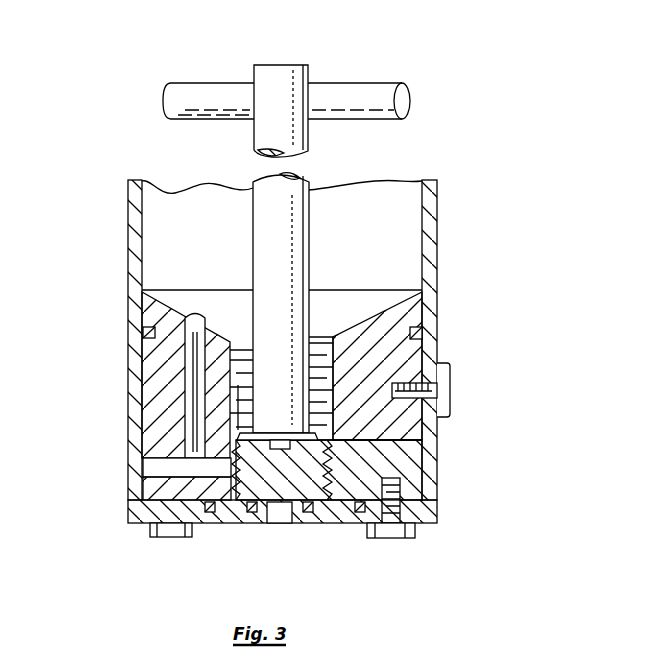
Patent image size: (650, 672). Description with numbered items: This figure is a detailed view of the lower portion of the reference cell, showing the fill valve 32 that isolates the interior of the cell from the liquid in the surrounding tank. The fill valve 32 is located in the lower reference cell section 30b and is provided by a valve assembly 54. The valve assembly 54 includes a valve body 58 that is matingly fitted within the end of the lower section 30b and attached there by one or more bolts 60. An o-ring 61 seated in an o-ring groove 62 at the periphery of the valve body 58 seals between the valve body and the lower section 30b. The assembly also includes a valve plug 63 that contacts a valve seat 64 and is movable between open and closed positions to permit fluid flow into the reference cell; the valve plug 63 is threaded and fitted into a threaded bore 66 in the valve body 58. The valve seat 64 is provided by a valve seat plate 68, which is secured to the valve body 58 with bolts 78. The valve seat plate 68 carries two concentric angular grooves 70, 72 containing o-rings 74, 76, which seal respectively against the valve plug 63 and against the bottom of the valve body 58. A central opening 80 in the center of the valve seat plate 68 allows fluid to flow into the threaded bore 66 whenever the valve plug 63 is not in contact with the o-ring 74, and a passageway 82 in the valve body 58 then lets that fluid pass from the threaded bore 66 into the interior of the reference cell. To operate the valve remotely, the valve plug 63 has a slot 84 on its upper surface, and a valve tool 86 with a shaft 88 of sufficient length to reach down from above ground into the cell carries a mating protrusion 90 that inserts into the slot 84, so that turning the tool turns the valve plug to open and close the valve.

The valve tool 86 is at (332, 71).
The shaft 88 is at (300, 133).
The lower reference cell section 30b is at (437, 212).
The fill valve 32 is at (284, 340).
The valve assembly 54 is at (206, 283).
The threaded bore 66 is at (233, 347).
The o-ring groove 62 is at (414, 330).
The o-ring 61 is at (424, 332).
The bolts 60 is at (449, 373).
The mating protrusion 90 is at (277, 430).
The valve body 58 is at (158, 407).
The passageway 82 is at (183, 441).
The slot 84 is at (347, 440).
The valve seat plate 68 is at (127, 511).
The bolts 78 is at (152, 528).
The groove 72 is at (208, 514).
The o-ring 76 is at (217, 510).
The groove 70 is at (251, 513).
The o-ring 74 is at (266, 508).
The central opening 80 is at (283, 513).
The valve seat 64 is at (312, 528).
The valve plug 63 is at (311, 484).